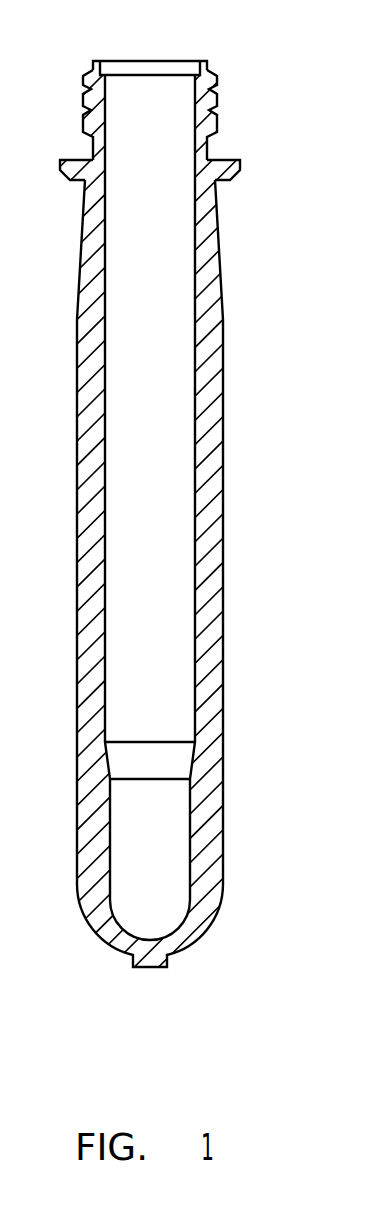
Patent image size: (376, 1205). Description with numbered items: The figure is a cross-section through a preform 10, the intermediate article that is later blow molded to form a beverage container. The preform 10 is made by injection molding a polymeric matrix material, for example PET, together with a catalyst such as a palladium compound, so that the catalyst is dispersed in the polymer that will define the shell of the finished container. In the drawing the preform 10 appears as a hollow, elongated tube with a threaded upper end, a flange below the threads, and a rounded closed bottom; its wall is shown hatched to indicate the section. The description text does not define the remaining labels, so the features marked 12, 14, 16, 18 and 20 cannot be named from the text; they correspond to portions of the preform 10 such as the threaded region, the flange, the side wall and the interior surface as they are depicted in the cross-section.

The preform 10 is at (234, 507).
The external threads 12 is at (214, 88).
The flange 14 is at (229, 161).
The outer wall surface 16 is at (221, 223).
The side wall 18 is at (222, 264).
The inner bore surface 20 is at (223, 626).